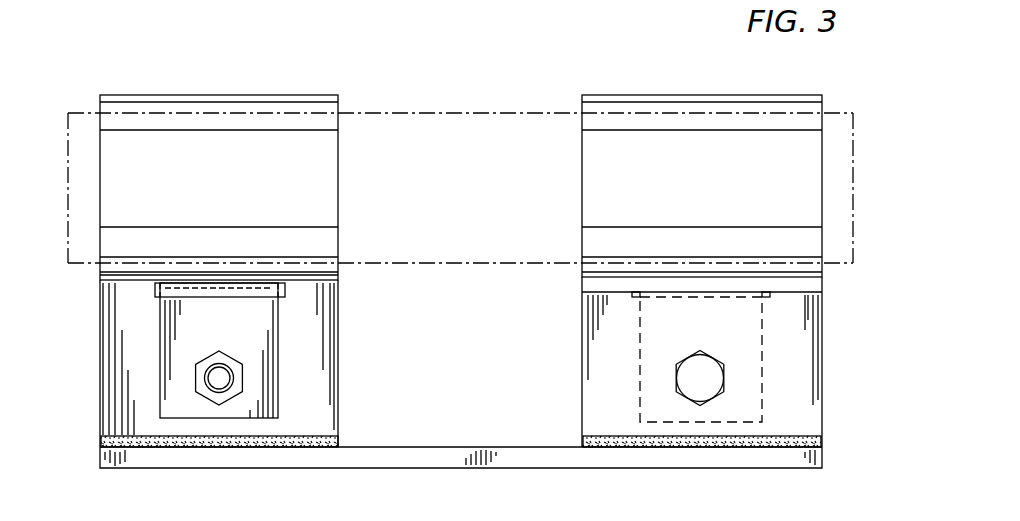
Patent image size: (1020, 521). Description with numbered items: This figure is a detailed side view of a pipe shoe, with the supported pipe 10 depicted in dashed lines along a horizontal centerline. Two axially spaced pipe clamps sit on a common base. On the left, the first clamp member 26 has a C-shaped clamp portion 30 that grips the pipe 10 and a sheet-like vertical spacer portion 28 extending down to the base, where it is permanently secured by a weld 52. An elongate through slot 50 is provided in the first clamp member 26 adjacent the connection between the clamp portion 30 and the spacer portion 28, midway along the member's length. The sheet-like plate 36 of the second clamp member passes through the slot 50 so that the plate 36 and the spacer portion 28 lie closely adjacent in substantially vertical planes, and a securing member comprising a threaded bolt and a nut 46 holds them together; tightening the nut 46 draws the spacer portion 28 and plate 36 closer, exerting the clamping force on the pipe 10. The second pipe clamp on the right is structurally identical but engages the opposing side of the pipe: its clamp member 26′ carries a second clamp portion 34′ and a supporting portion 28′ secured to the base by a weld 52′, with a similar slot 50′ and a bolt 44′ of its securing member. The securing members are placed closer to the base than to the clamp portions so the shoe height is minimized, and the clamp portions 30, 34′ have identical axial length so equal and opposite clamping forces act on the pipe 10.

The pipe 10 is at (460, 113).
The clamp portion 30 is at (315, 157).
The second clamp portion 34′ is at (588, 191).
The first clamp member 26 is at (111, 302).
The vertical spacer portion 28 is at (119, 362).
The plate 36 is at (268, 372).
The through slot 50 is at (285, 290).
The nut 46 is at (222, 387).
The weld 52 is at (338, 440).
The clamp member 26′ is at (600, 326).
The supporting portion 28′ is at (800, 365).
The slot 50′ is at (770, 296).
The bolt 44′ is at (690, 383).
The weld 52′ is at (582, 440).